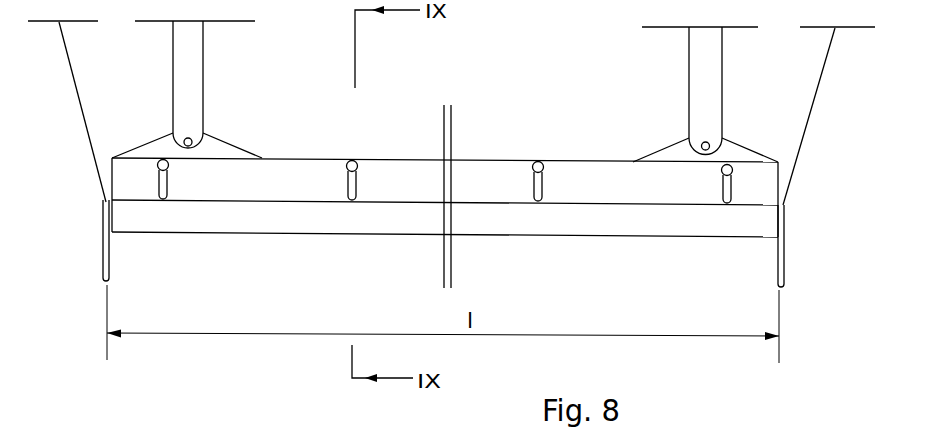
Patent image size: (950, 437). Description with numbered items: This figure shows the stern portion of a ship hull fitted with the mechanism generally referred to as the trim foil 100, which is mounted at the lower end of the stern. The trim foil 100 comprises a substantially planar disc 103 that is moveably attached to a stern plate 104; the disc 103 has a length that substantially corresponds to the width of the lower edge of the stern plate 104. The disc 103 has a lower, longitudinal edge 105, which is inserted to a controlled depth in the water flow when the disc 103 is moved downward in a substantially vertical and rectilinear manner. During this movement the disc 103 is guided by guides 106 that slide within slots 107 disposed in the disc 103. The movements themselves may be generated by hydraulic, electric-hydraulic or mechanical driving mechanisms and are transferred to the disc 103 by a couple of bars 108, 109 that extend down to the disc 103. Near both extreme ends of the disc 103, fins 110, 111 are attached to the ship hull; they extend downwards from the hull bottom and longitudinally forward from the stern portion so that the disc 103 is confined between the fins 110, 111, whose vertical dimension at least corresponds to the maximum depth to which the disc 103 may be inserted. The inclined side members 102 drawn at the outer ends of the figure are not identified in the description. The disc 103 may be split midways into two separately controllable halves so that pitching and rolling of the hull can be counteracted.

The trim foil 100 is at (495, 139).
The inclined side members 102 is at (812, 119).
The disc 103 is at (422, 168).
The stern plate 104 is at (458, 96).
The lower longitudinal edge 105 is at (362, 237).
The guides 106 is at (349, 167).
The slots 107 is at (358, 181).
The bar 108 is at (190, 87).
The bar 109 is at (697, 73).
The fin 110 is at (103, 240).
The fin 111 is at (784, 250).